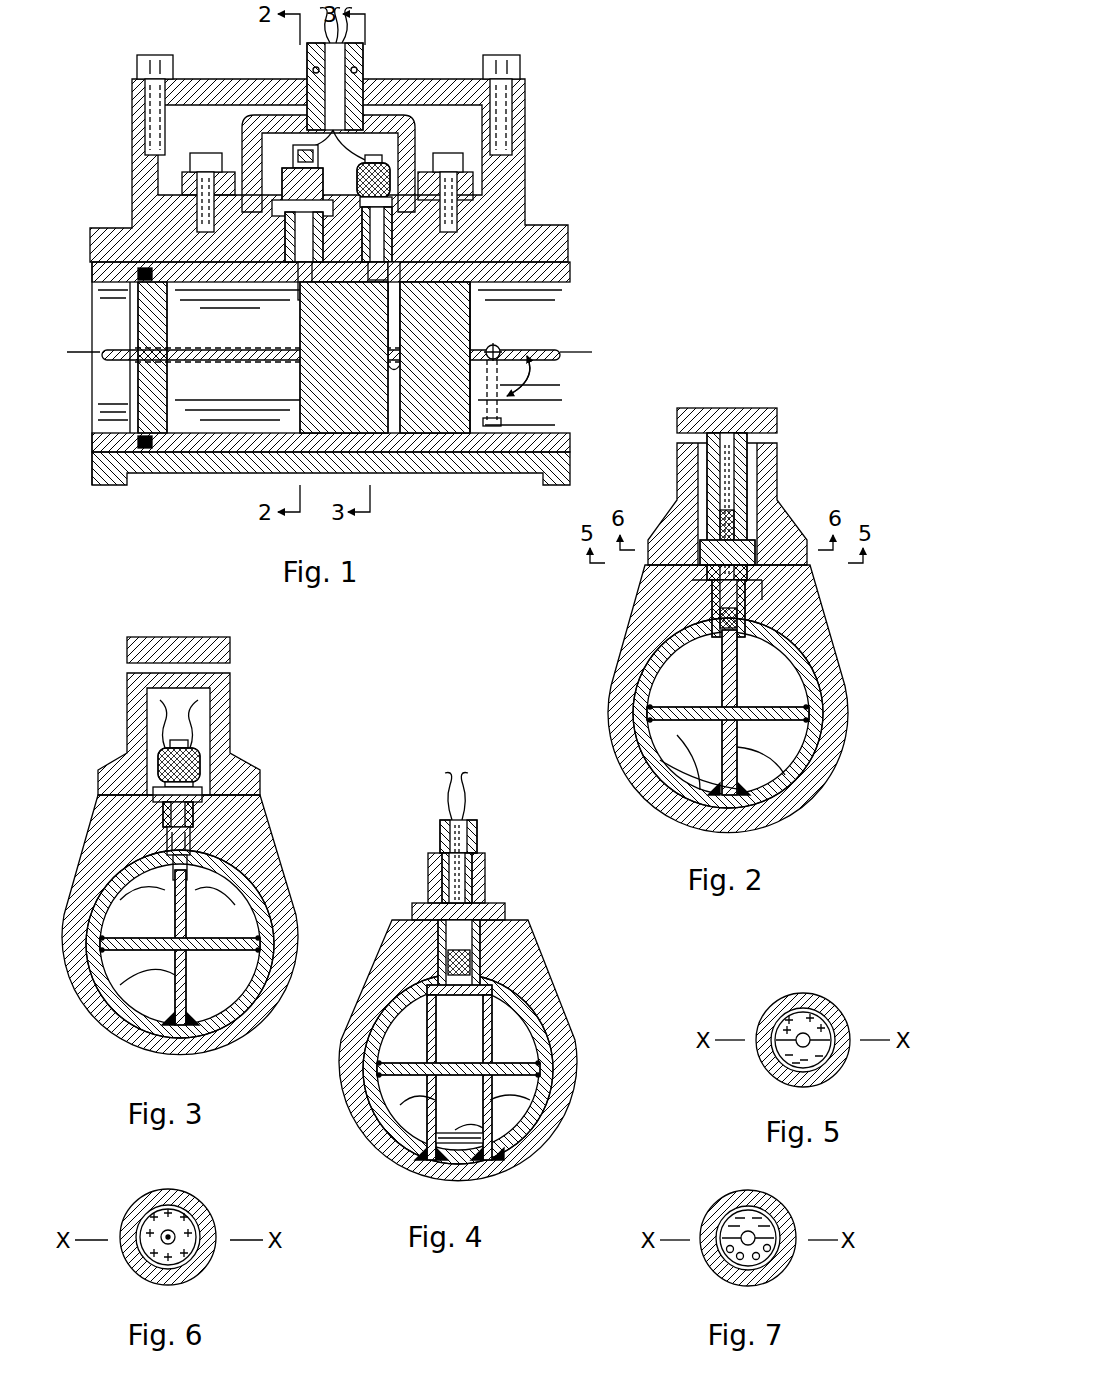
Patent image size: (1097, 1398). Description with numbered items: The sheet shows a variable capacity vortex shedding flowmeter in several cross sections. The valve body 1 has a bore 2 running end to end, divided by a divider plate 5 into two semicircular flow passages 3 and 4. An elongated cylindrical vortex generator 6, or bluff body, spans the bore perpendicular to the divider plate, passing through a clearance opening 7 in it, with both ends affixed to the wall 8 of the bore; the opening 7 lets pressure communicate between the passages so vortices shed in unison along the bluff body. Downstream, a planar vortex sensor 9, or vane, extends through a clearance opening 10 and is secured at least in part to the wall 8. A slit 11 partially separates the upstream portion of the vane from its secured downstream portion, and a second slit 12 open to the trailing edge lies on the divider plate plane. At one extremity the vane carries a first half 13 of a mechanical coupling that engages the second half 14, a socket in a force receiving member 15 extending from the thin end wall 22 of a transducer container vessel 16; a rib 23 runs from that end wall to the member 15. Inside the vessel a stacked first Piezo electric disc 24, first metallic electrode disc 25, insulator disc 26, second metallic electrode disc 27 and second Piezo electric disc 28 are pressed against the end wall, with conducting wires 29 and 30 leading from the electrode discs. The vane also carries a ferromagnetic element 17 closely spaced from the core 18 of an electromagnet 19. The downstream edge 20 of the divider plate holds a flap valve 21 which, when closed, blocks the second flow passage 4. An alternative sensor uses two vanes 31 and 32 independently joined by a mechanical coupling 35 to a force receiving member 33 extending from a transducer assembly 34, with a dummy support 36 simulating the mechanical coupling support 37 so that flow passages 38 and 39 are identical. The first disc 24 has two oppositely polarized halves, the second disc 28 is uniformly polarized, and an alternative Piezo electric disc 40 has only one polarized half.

In FIG. 1, the valve body 1 is at (163, 207).
In FIG. 2, the valve body 1 is at (677, 688).
In FIG. 1, the bore 2 is at (115, 290).
In FIG. 1, the first flow passage 3 is at (120, 313).
In FIG. 2, the first flow passage 3 is at (657, 685).
In FIG. 1, the second flow passage 4 is at (113, 375).
In FIG. 2, the second flow passage 4 is at (677, 735).
In FIG. 1, the divider plate 5 is at (200, 425).
In FIG. 2, the divider plate 5 is at (737, 747).
In FIG. 3, the divider plate 5 is at (253, 875).
In FIG. 1, the vortex generator 6 is at (150, 395).
In FIG. 1, the clearance opening 7 is at (165, 330).
In FIG. 1, the wall of the bore 8 is at (170, 455).
In FIG. 3, the wall of the bore 8 is at (120, 917).
In FIG. 1, the vortex sensor 9 is at (400, 340).
In FIG. 2, the vortex sensor 9 is at (787, 787).
In FIG. 3, the vortex sensor 9 is at (100, 997).
In FIG. 1, the clearance opening 10 is at (230, 360).
In FIG. 2, the clearance opening 10 is at (717, 793).
In FIG. 1, the slit 11 is at (440, 353).
In FIG. 1, the slit 12 is at (472, 300).
In FIG. 1, the first half of mechanical coupling 13 is at (372, 332).
In FIG. 2, the first half of mechanical coupling 13 is at (770, 705).
In FIG. 1, the second half of mechanical coupling 14 is at (233, 170).
In FIG. 1, the force receiving member 15 is at (355, 200).
In FIG. 2, the force receiving member 15 is at (737, 643).
In FIG. 1, the transducer container vessel 16 is at (275, 185).
In FIG. 2, the transducer container vessel 16 is at (748, 523).
In FIG. 5, the transducer container vessel 16 is at (770, 1003).
In FIG. 6, the transducer container vessel 16 is at (132, 1210).
In FIG. 7, the transducer container vessel 16 is at (712, 1207).
In FIG. 1, the ferromagnetic element 17 is at (400, 300).
In FIG. 3, the ferromagnetic element 17 is at (163, 867).
In FIG. 1, the core 18 is at (392, 245).
In FIG. 3, the core 18 is at (193, 837).
In FIG. 1, the electromagnet 19 is at (392, 180).
In FIG. 3, the electromagnet 19 is at (200, 767).
In FIG. 1, the downstream edge 20 is at (500, 352).
In FIG. 1, the flap valve 21 is at (520, 390).
In FIG. 2, the thin end wall 22 is at (760, 623).
In FIG. 2, the rib 23 is at (700, 617).
In FIG. 2, the first Piezo electric disc 24 is at (697, 590).
In FIG. 5, the first Piezo electric disc 24 is at (770, 1042).
In FIG. 2, the first metallic electrode disc 25 is at (757, 593).
In FIG. 2, the insulator disc 26 is at (673, 520).
In FIG. 2, the second metallic electrode disc 27 is at (760, 540).
In FIG. 2, the second Piezo electric disc 28 is at (750, 530).
In FIG. 6, the second Piezo electric disc 28 is at (142, 1270).
In FIG. 2, the conducting wire 29 is at (705, 430).
In FIG. 2, the conducting wire 30 is at (760, 430).
In FIG. 4, the vane 31 is at (370, 1120).
In FIG. 4, the vane 32 is at (523, 1128).
In FIG. 4, the force receiving member 33 is at (515, 957).
In FIG. 4, the transducer assembly 34 is at (487, 880).
In FIG. 4, the mechanical coupling 35 is at (523, 993).
In FIG. 4, the dummy support 36 is at (543, 1160).
In FIG. 4, the mechanical coupling support 37 is at (490, 1012).
In FIG. 4, the flow passage 38 is at (513, 1047).
In FIG. 4, the flow passage 39 is at (517, 1083).
In FIG. 7, the Piezo electric disc 40 is at (710, 1243).